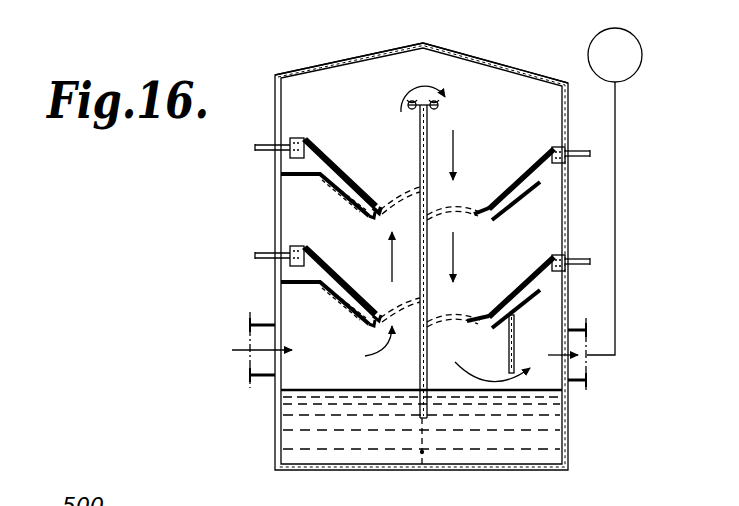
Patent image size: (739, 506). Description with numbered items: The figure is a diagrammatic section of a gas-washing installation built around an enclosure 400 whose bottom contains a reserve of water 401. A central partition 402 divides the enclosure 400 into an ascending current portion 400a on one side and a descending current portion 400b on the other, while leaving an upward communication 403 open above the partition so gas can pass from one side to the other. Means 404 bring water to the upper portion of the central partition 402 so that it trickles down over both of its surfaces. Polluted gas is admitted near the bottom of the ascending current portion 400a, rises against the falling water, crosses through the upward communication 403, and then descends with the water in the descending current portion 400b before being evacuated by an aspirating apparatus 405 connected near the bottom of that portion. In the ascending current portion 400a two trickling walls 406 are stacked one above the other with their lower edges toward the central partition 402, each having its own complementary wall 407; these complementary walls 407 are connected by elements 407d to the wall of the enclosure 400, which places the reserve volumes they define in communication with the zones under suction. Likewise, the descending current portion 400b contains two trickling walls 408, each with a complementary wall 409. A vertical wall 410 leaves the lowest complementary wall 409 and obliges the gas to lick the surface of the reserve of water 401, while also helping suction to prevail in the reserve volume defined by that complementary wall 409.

The enclosure 400 is at (344, 56).
The ascending current portion 400a is at (375, 228).
The descending current portion 400b is at (468, 252).
The reserve of water 401 is at (383, 447).
The central partition 402 is at (418, 136).
The upward communication 403 is at (423, 58).
The water supply means 404 is at (414, 103).
The aspirating apparatus 405 is at (614, 191).
The trickling wall 406 is at (345, 186).
The complementary wall 407 is at (346, 204).
The connecting element 407d is at (293, 177).
The trickling wall 408 is at (528, 233).
The complementary wall 409 is at (520, 206).
The vertical wall 410 is at (508, 344).